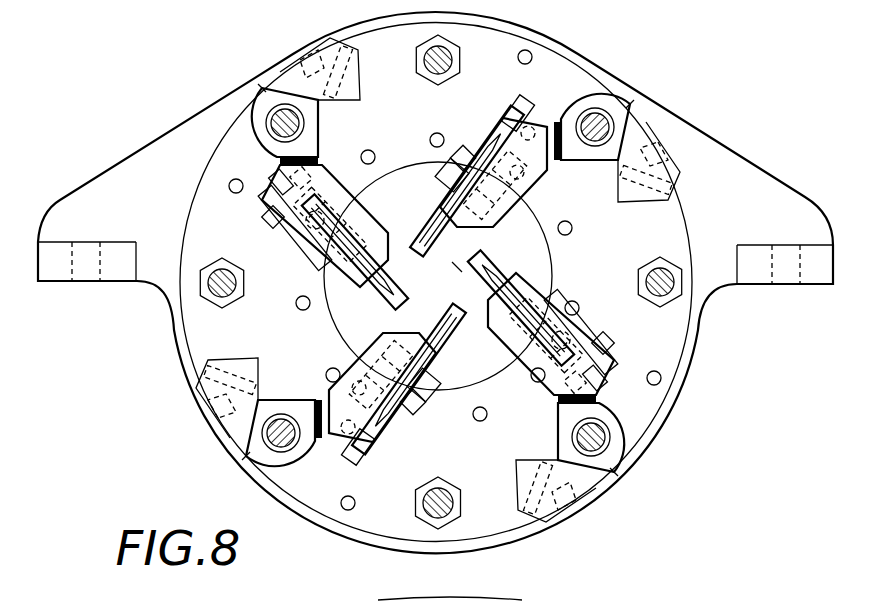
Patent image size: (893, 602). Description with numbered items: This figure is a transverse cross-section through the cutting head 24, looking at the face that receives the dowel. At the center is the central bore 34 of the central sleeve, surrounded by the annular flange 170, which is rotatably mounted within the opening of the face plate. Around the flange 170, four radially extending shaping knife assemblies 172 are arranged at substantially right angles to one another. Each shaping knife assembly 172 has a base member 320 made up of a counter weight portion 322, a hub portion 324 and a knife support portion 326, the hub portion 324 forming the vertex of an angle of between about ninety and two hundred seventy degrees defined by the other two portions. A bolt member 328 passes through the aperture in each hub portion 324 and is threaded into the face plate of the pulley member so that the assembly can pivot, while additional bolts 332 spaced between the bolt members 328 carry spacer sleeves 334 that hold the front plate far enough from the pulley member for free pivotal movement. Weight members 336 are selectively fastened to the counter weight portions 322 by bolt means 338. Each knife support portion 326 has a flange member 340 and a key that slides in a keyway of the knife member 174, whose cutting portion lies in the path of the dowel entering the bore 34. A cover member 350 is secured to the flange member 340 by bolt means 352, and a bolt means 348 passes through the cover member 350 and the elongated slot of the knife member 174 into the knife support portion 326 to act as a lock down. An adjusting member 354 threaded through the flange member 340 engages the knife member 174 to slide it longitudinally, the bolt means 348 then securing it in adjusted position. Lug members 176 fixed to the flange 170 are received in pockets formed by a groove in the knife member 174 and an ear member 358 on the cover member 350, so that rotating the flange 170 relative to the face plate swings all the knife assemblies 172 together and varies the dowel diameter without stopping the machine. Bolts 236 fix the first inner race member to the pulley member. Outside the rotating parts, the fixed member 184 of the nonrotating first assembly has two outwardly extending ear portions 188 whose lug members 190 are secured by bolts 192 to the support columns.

The cutting head 24 is at (160, 347).
The central bore 34 is at (456, 256).
The annular flange 170 is at (540, 212).
The shaping knife assembly 172 is at (255, 222).
The knife member 174 is at (494, 259).
The lug members 176 is at (420, 188).
The fixed member 184 is at (592, 38).
The ear portions 188 is at (100, 172).
The lug members 190 is at (806, 245).
The bolts 192 is at (106, 242).
The bolts 236 is at (374, 154).
The base member 320 is at (260, 84).
The counter weight portion 322 is at (300, 46).
The hub portion 324 is at (255, 125).
The knife support portion 326 is at (322, 160).
The bolt members 328 is at (272, 112).
The bolts 332 is at (658, 268).
The spacer sleeves 334 is at (454, 62).
The weight members 336 is at (352, 76).
The bolt means 338 is at (318, 45).
The flange member 340 is at (274, 182).
The bolt means 348 is at (300, 264).
The cover member 350 is at (296, 239).
The bolt means 352 is at (268, 212).
The adjusting member 354 is at (296, 176).
The ear member 358 is at (301, 300).